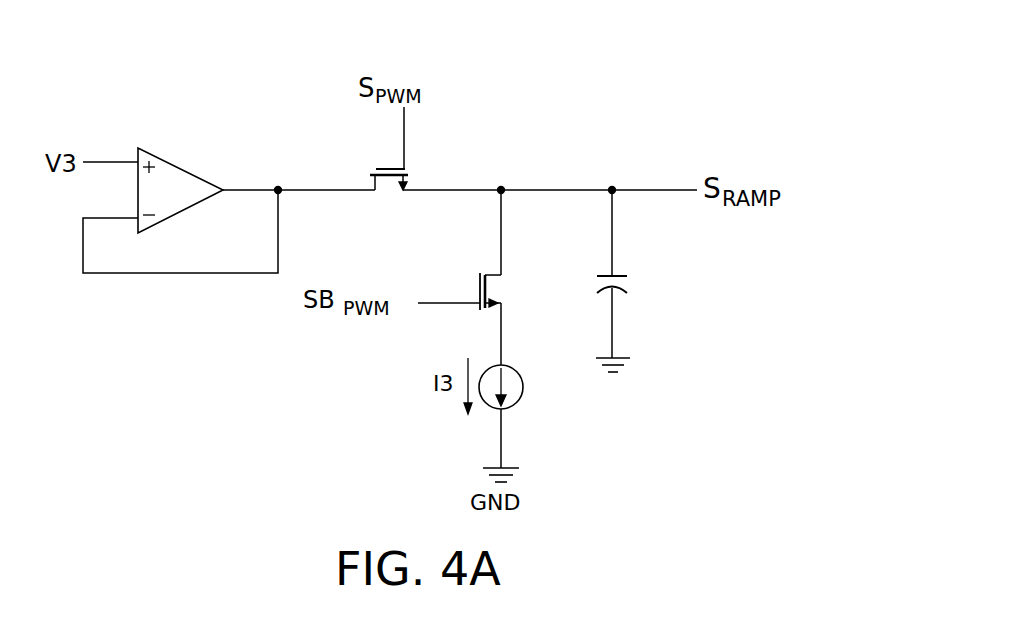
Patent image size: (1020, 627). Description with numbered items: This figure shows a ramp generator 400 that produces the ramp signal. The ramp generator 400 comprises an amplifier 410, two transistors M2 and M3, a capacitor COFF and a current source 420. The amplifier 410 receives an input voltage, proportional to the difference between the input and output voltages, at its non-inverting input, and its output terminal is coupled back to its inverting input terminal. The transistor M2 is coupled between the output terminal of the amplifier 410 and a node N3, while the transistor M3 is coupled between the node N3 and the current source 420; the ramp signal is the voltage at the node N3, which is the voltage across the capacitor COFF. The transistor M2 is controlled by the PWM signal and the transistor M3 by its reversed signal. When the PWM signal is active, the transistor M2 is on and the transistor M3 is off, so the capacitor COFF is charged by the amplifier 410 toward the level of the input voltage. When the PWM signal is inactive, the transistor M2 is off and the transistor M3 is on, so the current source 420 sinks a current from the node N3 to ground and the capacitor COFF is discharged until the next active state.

The ramp generator 400 is at (677, 81).
The amplifier 410 is at (187, 170).
The current source 420 is at (524, 386).
The transistor M2 is at (388, 204).
The transistor M3 is at (505, 289).
The node N3 is at (501, 186).
The capacitor COFF is at (629, 284).